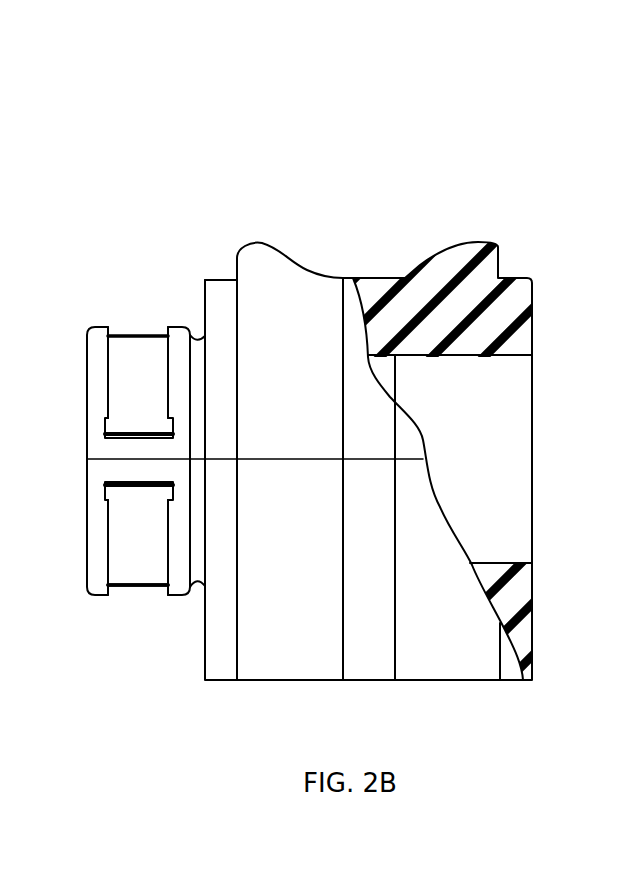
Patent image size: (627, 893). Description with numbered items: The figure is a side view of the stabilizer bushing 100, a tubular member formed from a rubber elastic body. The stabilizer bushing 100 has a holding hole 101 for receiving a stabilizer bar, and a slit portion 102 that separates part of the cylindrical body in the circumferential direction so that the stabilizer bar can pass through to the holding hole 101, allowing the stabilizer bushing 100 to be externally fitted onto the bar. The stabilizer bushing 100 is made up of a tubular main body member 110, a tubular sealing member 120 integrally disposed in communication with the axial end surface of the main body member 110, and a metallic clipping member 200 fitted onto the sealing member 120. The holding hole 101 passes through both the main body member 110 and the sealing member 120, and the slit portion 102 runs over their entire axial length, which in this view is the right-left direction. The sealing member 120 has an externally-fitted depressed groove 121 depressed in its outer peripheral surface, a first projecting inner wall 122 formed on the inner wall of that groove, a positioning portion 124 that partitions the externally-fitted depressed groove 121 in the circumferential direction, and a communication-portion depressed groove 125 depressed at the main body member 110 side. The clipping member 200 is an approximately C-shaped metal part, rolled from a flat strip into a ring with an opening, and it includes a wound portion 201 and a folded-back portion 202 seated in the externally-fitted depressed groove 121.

The stabilizer bushing 100 is at (527, 130).
The holding hole 101 is at (453, 356).
The slit portion 102 is at (252, 460).
The main body member 110 is at (502, 240).
The sealing member 120 is at (161, 304).
The externally-fitted depressed groove 121 is at (138, 565).
The first projecting inner wall 122 is at (110, 392).
The positioning portion 124 is at (160, 472).
The communication-portion depressed groove 125 is at (200, 380).
The clipping member 200 is at (95, 447).
The wound portion 201 is at (130, 352).
The folded-back portion 202 is at (118, 480).